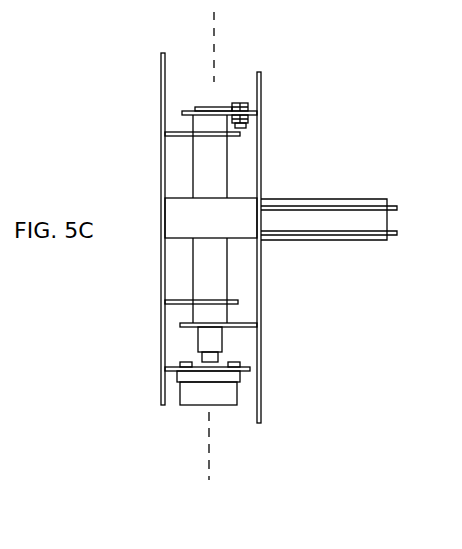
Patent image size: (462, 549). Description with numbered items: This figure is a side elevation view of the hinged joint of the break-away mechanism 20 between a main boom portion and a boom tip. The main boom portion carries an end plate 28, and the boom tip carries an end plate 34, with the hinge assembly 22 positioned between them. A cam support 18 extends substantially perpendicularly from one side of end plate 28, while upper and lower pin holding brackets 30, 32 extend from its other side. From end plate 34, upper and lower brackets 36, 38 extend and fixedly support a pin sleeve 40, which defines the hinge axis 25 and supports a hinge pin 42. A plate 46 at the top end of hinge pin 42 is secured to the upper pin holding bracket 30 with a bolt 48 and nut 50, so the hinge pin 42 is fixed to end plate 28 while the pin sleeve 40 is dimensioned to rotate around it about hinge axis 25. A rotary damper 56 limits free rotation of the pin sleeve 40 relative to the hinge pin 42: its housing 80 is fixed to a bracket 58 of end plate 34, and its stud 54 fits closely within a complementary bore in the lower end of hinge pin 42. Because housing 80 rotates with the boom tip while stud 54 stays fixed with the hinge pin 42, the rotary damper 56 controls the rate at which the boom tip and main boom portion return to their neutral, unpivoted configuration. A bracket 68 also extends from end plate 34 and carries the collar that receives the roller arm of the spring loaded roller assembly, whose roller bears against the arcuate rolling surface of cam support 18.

The cam support 18 is at (377, 200).
The break-away mechanism 20 is at (317, 85).
The hinge assembly 22 is at (202, 155).
The hinge axis 25 is at (202, 445).
The end plate 28 is at (261, 417).
The upper pin holding bracket 30 is at (188, 110).
The lower pin holding bracket 32 is at (238, 320).
The end plate 34 is at (161, 260).
The upper bracket 36 is at (173, 132).
The lower bracket 38 is at (177, 303).
The pin sleeve 40 is at (207, 175).
The hinge pin 42 is at (218, 340).
The plate 46 is at (208, 107).
The bolt 48 is at (240, 103).
The nut 50 is at (249, 119).
The stud 54 is at (212, 358).
The rotary damper 56 is at (240, 390).
The bracket 58 is at (170, 370).
The bracket 68 is at (228, 218).
The housing 80 is at (212, 392).